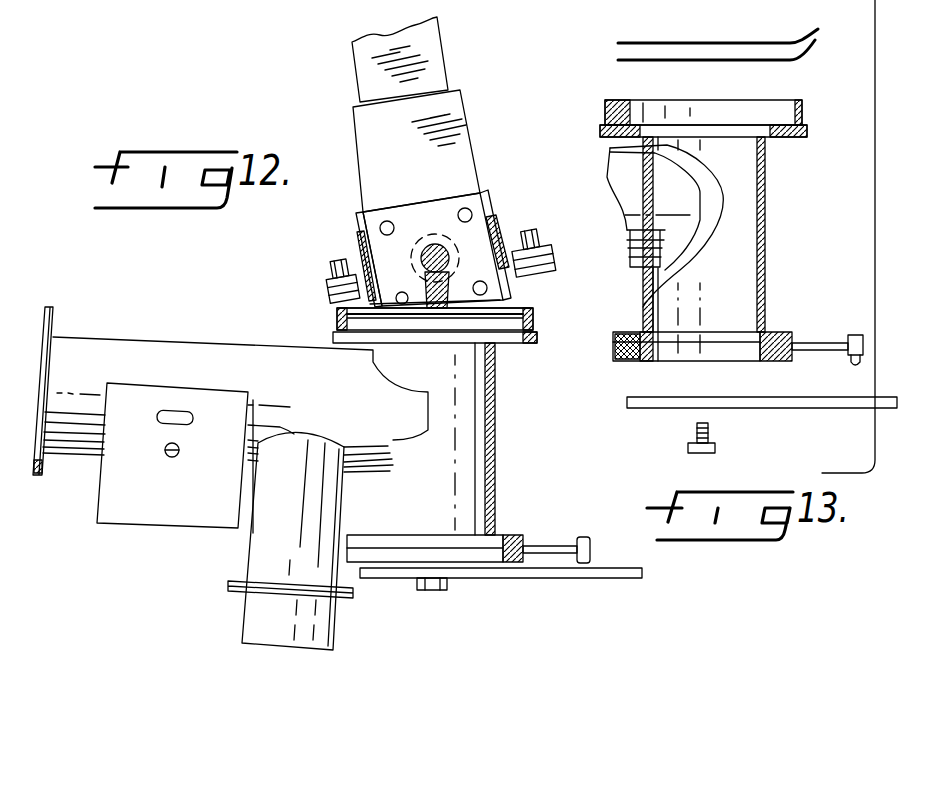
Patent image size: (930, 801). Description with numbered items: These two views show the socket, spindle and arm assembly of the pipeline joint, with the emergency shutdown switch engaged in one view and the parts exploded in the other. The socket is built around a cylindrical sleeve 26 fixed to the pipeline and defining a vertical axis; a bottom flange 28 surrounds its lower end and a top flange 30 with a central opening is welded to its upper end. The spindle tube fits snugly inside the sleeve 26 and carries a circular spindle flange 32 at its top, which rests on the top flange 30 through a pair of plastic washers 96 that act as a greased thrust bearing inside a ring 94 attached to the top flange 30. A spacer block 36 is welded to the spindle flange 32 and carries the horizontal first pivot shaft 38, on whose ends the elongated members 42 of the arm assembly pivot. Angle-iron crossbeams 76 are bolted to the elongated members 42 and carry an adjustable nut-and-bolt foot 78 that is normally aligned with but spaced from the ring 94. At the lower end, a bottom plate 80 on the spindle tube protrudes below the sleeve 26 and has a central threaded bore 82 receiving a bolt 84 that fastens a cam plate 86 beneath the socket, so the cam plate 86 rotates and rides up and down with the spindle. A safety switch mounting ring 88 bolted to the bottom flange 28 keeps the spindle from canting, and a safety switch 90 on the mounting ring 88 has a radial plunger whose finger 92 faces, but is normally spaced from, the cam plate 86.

In FIG. 12, the cylindrical sleeve 26 is at (482, 473).
In FIG. 13, the cylindrical sleeve 26 is at (767, 255).
In FIG. 12, the bottom flange 28 is at (512, 535).
In FIG. 13, the bottom flange 28 is at (780, 332).
In FIG. 12, the top flange 30 is at (523, 348).
In FIG. 13, the top flange 30 is at (792, 137).
In FIG. 12, the spindle flange 32 is at (513, 303).
In FIG. 12, the spacer block 36 is at (424, 336).
In FIG. 12, the first pivot shaft 38 is at (437, 240).
In FIG. 12, the elongated members 42 is at (440, 55).
In FIG. 12, the crossbeams 76 is at (500, 220).
In FIG. 12, the foot 78 is at (533, 228).
In FIG. 13, the bottom plate 80 is at (766, 8).
In FIG. 13, the threaded bore 82 is at (672, 8).
In FIG. 12, the bolt 84 is at (433, 590).
In FIG. 13, the bolt 84 is at (695, 458).
In FIG. 12, the cam plate 86 is at (537, 577).
In FIG. 13, the cam plate 86 is at (770, 410).
In FIG. 12, the safety switch mounting ring 88 is at (403, 552).
In FIG. 13, the safety switch mounting ring 88 is at (778, 362).
In FIG. 12, the safety switch 90 is at (540, 543).
In FIG. 13, the safety switch 90 is at (818, 343).
In FIG. 12, the finger 92 is at (592, 560).
In FIG. 13, the finger 92 is at (850, 362).
In FIG. 12, the ring 94 is at (340, 320).
In FIG. 13, the ring 94 is at (803, 108).
In FIG. 12, the plastic washers 96 is at (535, 322).
In FIG. 13, the plastic washers 96 is at (812, 38).